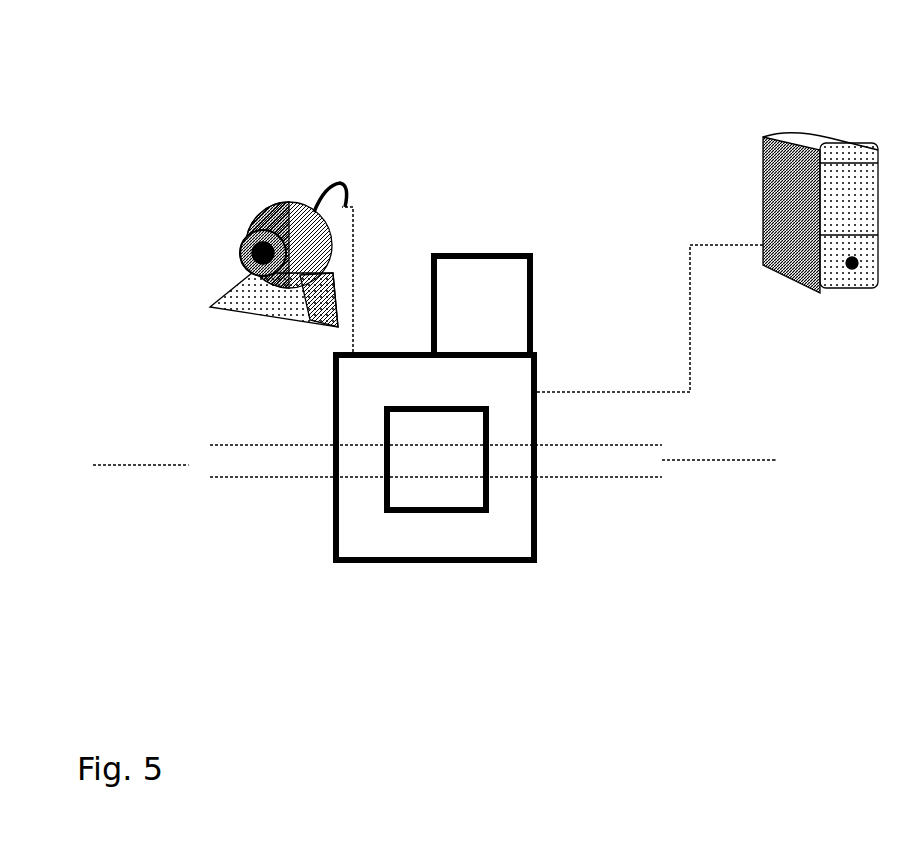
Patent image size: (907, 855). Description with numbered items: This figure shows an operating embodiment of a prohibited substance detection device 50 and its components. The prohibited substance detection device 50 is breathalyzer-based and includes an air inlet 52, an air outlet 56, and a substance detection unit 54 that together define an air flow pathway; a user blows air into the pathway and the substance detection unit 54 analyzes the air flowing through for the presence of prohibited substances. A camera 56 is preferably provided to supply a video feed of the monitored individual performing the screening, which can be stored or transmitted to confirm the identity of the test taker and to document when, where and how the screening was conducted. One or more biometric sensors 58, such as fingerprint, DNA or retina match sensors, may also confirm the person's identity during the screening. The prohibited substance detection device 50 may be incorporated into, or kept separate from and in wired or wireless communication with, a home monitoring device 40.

The home monitoring device 40 is at (760, 115).
The prohibited substance detection device 50 is at (431, 566).
The air inlet 52 is at (296, 488).
The substance detection unit 54 is at (465, 490).
The air outlet / camera 56 is at (206, 205).
The biometric sensors 58 is at (537, 243).